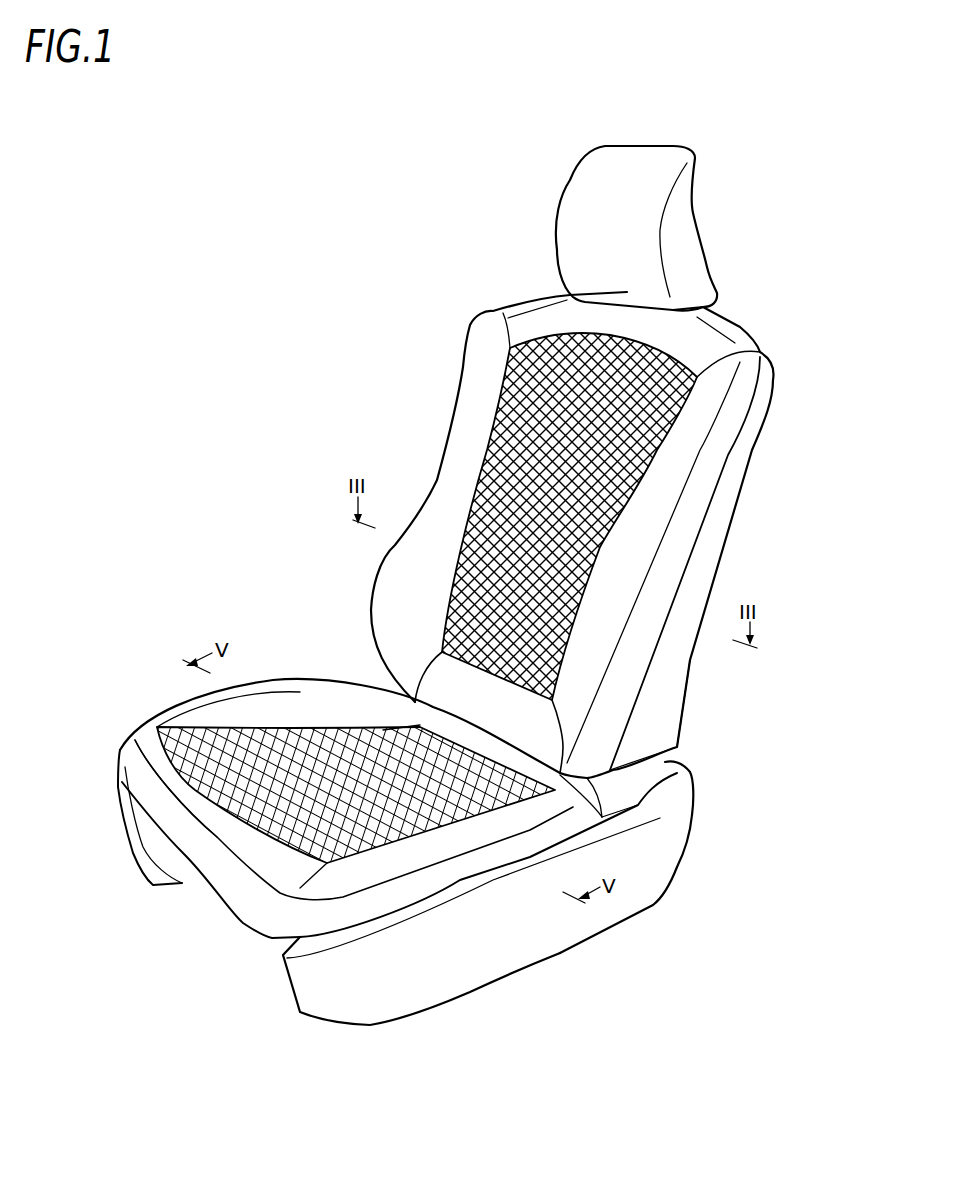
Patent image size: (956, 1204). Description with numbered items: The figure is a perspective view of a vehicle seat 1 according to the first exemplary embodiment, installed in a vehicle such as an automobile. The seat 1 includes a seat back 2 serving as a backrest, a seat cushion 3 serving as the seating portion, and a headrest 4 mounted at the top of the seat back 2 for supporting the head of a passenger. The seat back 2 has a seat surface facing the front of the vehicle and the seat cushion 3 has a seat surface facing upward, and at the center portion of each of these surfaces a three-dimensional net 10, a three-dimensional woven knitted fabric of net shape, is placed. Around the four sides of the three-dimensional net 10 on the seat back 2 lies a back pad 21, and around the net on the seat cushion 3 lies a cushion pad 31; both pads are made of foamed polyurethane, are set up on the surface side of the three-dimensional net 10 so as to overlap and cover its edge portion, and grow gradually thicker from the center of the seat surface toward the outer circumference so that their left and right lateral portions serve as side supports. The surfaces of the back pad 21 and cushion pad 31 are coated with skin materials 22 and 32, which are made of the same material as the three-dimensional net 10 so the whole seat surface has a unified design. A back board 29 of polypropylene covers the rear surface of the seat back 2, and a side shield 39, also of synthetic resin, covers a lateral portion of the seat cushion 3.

The seat 1 is at (368, 300).
The seat back 2 is at (780, 362).
The seat cushion 3 is at (239, 929).
The headrest 4 is at (625, 180).
The three-dimensional net 10 is at (660, 362).
The back pad 21 is at (663, 538).
The skin material 22 is at (653, 562).
The back board 29 is at (663, 697).
The cushion pad 31 is at (290, 700).
The skin material 32 is at (228, 709).
The side shield 39 is at (650, 857).